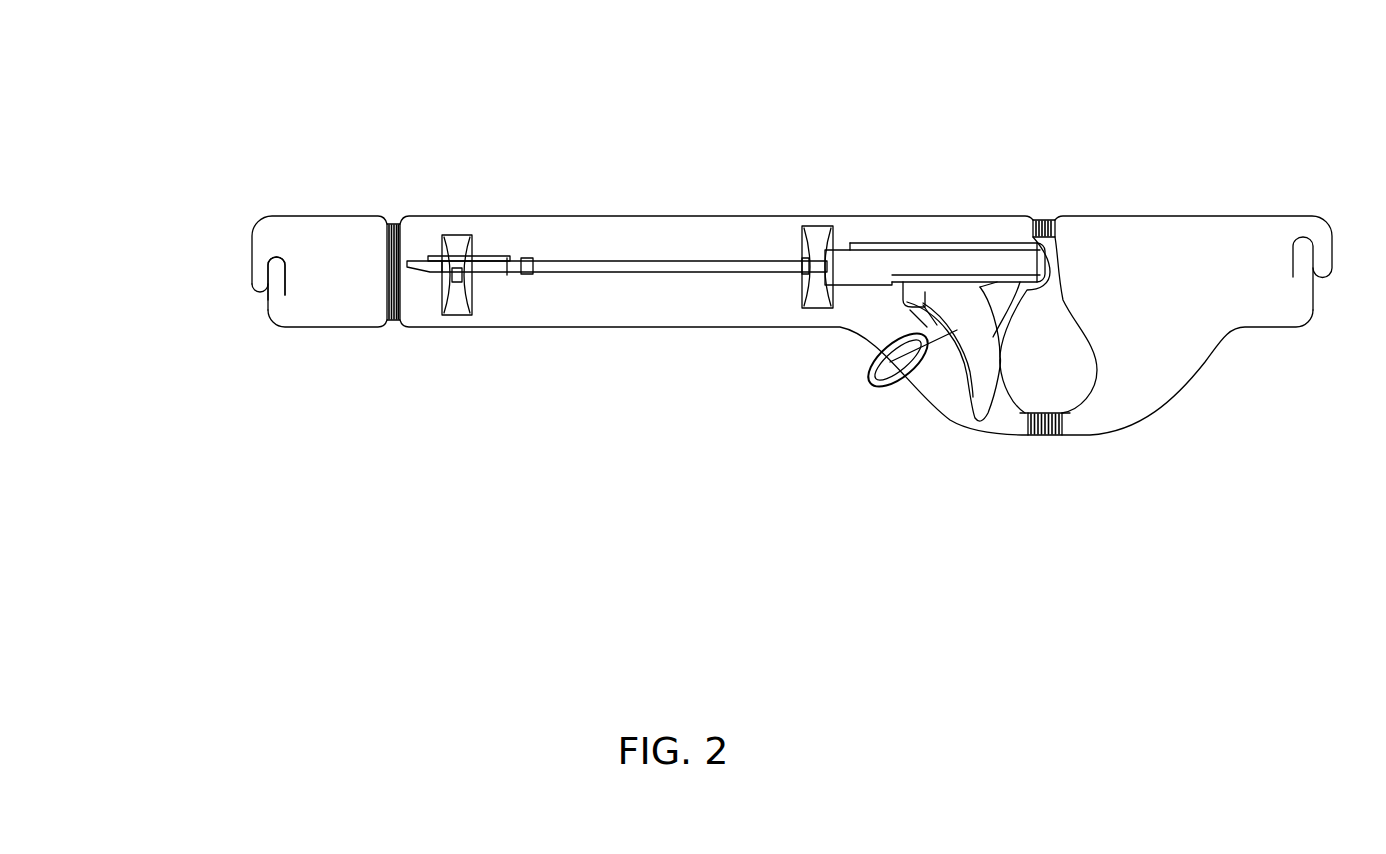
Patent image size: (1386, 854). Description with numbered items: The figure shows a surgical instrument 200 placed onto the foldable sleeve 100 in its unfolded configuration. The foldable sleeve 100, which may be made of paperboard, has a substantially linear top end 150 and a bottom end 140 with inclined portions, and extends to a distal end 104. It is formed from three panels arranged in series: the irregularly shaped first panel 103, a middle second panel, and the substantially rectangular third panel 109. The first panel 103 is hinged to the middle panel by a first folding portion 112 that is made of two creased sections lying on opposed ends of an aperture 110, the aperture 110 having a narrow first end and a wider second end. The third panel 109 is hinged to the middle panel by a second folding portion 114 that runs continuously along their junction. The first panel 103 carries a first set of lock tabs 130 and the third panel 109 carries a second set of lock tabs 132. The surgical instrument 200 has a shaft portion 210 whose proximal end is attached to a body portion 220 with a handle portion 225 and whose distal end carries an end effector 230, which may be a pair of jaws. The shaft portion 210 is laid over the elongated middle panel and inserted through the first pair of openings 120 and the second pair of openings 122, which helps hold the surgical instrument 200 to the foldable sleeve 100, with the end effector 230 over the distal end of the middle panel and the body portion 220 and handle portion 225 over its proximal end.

The foldable sleeve 100 is at (561, 208).
The first panel 103 is at (1133, 420).
The distal end 104 is at (222, 256).
The third panel 109 is at (330, 332).
The aperture 110 is at (1068, 355).
The first folding portion 112 is at (1042, 220).
The second folding portion 114 is at (392, 224).
The first pair of openings 120 is at (473, 240).
The second pair of openings 122 is at (830, 236).
The first set of lock tabs 130 is at (1320, 255).
The second set of lock tabs 132 is at (252, 276).
The bottom end 140 is at (717, 330).
The top end 150 is at (648, 216).
The surgical instrument 200 is at (905, 228).
The shaft portion 210 is at (668, 262).
The body portion 220 is at (943, 255).
The handle portion 225 is at (993, 420).
The end effector 230 is at (485, 272).